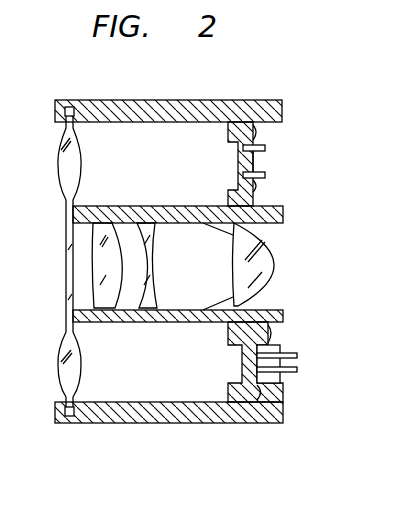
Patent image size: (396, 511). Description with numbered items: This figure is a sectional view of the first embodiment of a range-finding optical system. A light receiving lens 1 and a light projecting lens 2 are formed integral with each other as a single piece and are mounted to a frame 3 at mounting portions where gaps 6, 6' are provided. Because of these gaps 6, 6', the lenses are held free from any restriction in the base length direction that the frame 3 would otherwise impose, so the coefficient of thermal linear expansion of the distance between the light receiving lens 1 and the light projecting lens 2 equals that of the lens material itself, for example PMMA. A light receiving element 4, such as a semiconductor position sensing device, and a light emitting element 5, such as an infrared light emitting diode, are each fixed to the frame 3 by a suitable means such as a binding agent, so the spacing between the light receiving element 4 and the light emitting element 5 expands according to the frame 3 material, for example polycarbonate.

The light receiving lens 1 is at (62, 166).
The light projecting lens 2 is at (62, 360).
The frame 3 is at (217, 112).
The light receiving element 4 is at (256, 162).
The light emitting element 5 is at (270, 382).
The gap 6 is at (68, 93).
The gap 6' is at (67, 436).